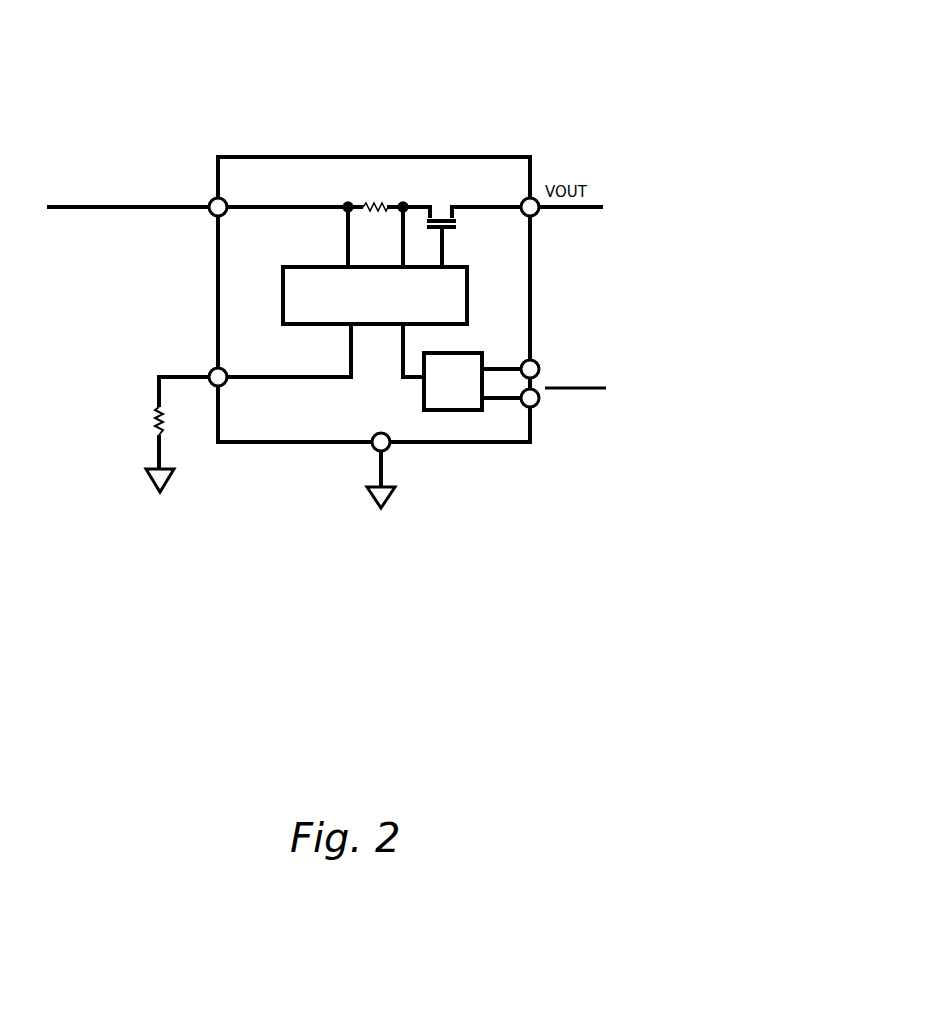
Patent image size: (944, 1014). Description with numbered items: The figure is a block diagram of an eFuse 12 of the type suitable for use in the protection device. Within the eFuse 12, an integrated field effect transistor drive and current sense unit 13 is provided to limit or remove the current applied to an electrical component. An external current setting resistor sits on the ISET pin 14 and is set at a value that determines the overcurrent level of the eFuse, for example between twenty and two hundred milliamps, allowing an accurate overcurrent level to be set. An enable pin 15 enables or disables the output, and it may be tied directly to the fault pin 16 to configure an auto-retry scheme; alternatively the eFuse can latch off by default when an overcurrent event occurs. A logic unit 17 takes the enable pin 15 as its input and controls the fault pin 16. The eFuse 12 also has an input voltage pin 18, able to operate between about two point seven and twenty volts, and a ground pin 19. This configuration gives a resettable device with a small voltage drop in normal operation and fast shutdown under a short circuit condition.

The eFuse 12 is at (518, 78).
The field effect transistor (FET) drive and current sense unit 13 is at (469, 285).
The ISET pin 14 is at (210, 370).
The enable pin 15 is at (565, 362).
The fault pin 16 is at (580, 404).
The logic unit 17 is at (470, 411).
The input voltage pin 18 is at (212, 200).
The ground pin 19 is at (392, 450).